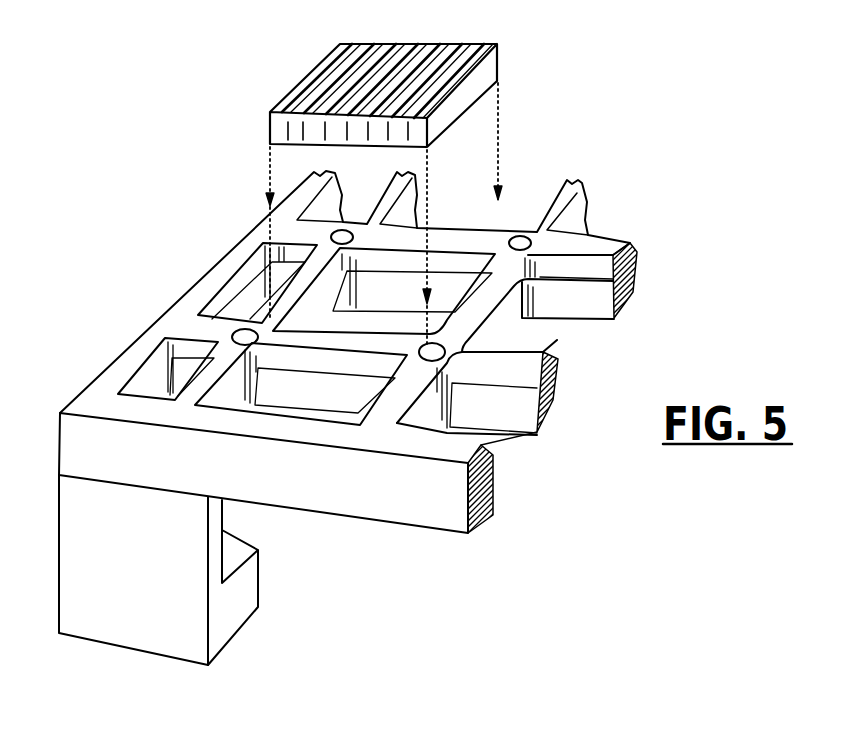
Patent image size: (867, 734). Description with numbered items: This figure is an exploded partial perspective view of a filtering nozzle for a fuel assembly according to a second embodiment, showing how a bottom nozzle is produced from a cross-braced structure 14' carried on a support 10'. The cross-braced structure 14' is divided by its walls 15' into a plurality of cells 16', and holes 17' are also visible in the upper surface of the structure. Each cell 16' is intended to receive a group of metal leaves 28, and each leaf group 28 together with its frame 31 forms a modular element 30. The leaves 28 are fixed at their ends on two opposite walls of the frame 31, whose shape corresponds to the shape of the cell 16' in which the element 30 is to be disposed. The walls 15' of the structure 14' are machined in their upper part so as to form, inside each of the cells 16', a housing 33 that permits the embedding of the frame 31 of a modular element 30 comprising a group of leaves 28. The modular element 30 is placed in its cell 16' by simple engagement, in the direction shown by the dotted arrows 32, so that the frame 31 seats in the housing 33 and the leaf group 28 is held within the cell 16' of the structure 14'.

The support base 10' is at (130, 570).
The cross-braced structure 14' is at (331, 371).
The walls of the structure 15' is at (498, 403).
The cells 16' is at (306, 346).
The locating hole 17' is at (388, 263).
The metal leaf groups 28 is at (410, 58).
The modular element 30 is at (425, 84).
The frame 31 is at (458, 100).
The arrows 32 is at (499, 165).
The housing 33 is at (516, 379).